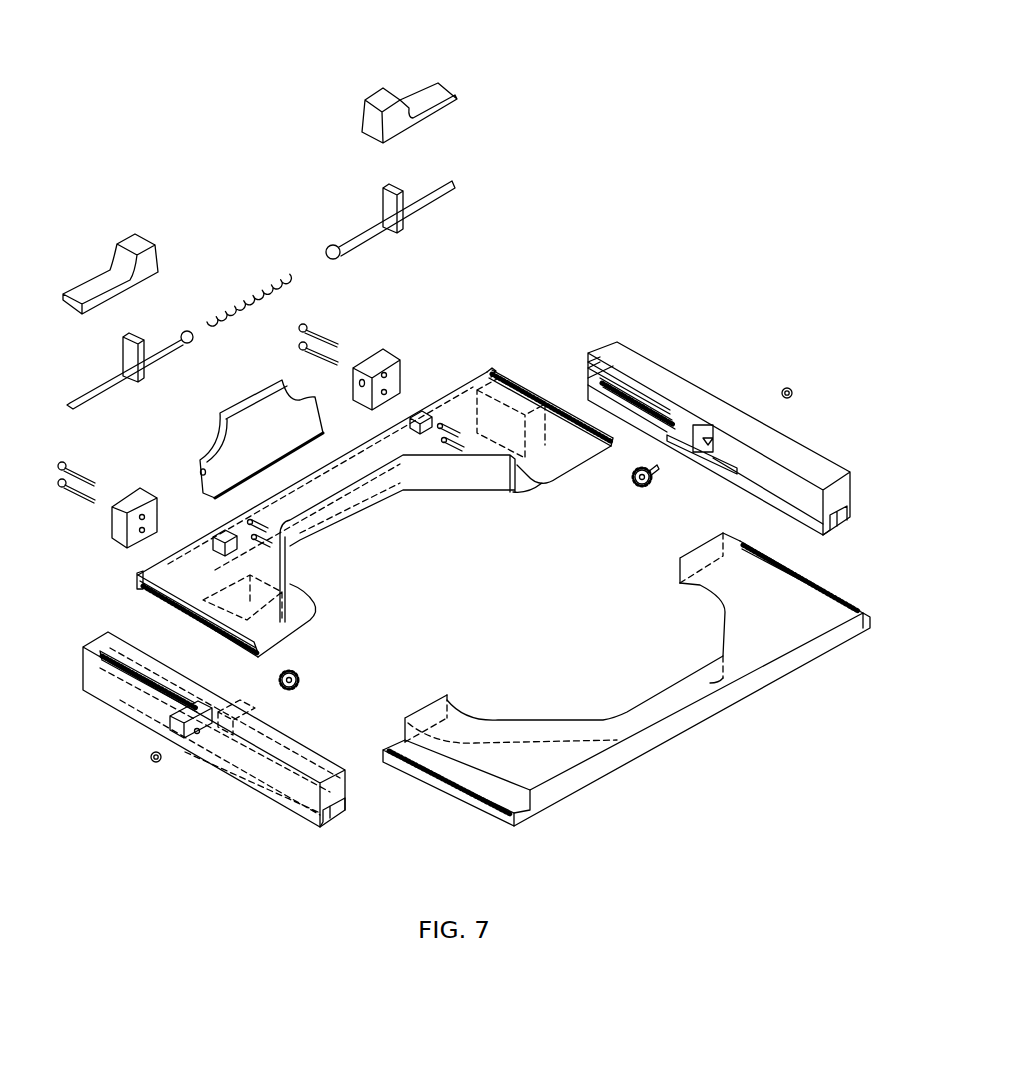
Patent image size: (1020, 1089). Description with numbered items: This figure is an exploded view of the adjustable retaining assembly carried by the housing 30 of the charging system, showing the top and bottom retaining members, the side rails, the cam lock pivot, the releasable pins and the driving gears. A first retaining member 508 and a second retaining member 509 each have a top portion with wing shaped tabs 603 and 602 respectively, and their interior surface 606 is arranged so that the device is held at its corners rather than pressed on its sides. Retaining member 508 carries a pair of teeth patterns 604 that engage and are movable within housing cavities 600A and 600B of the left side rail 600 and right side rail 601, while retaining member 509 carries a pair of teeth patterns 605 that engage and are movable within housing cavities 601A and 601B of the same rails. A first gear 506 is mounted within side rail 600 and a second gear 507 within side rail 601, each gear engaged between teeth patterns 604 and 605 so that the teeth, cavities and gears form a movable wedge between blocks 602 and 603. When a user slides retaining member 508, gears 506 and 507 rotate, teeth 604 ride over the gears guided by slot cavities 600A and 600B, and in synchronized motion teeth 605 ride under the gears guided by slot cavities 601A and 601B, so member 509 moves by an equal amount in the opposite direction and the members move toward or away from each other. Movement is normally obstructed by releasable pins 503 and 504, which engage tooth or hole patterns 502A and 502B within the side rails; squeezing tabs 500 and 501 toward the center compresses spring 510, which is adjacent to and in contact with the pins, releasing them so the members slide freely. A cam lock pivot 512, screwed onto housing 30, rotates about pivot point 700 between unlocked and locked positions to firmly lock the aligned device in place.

The housing 30 is at (657, 92).
The tab 500 is at (128, 232).
The tab 501 is at (378, 90).
The releasable pin 503 is at (110, 373).
The releasable pin 504 is at (362, 236).
The spring 510 is at (256, 288).
The cam lock pivot 512 is at (246, 403).
The pivot point 700 is at (197, 473).
The first retaining member 508 is at (452, 410).
The teeth or hole pattern 502A is at (145, 587).
The teeth or hole pattern 502B is at (522, 378).
The first teeth pattern 604 is at (478, 374).
The wing shaped tab 603 is at (547, 462).
The interior surface 606 is at (440, 478).
The right side rail 601 is at (613, 352).
The left side rail 600 is at (103, 648).
The housing cavity 600A is at (120, 673).
The housing cavity 600B is at (590, 372).
The housing cavity 601A is at (347, 800).
The housing cavity 601B is at (790, 510).
The first gear 506 is at (294, 668).
The second gear 507 is at (634, 488).
The second retaining member 509 is at (567, 750).
The second teeth pattern 605 is at (445, 793).
The wing shaped tab 602 is at (453, 712).